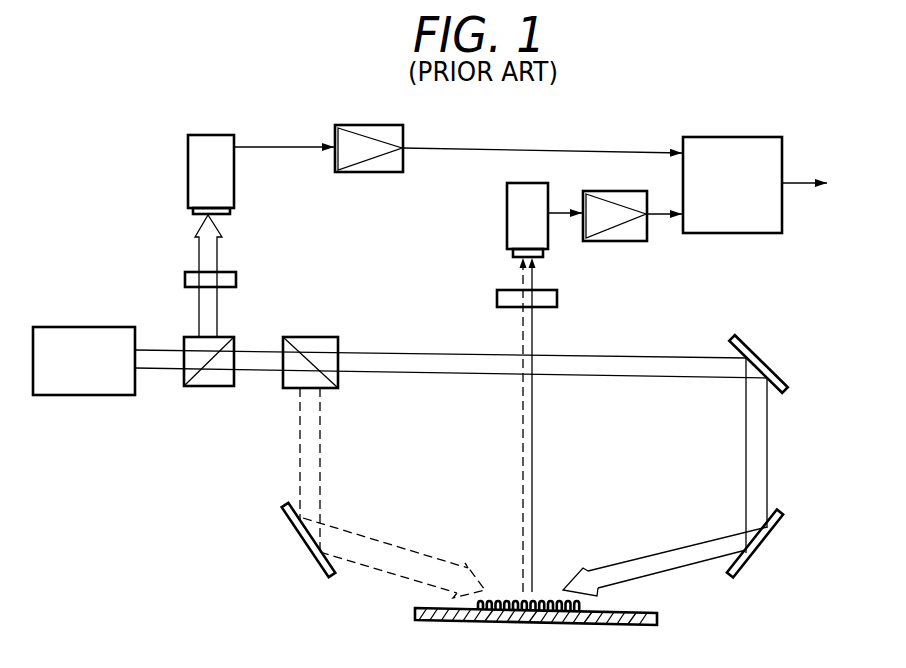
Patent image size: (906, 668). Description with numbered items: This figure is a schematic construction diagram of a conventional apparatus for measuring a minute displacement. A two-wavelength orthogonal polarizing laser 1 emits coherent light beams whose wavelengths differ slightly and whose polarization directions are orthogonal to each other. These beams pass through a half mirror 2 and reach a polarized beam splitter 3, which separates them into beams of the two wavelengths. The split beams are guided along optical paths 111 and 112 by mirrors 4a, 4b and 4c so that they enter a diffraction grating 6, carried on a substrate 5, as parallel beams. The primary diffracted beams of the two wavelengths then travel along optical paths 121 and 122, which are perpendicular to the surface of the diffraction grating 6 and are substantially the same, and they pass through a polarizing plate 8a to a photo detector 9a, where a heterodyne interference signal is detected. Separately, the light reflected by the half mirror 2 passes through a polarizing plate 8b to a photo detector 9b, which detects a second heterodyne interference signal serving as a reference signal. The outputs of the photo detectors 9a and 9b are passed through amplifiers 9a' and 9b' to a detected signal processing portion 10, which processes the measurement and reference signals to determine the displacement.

The two-wavelength orthogonal polarizing laser 1 is at (108, 327).
The half mirror 2 is at (228, 337).
The polarized beam splitter 3 is at (320, 337).
The mirror 4a is at (747, 348).
The mirror 4b is at (758, 548).
The mirror 4c is at (285, 515).
The substrate 5 is at (657, 616).
The diffraction grating 6 is at (545, 600).
The polarizing plate 8a is at (497, 295).
The polarizing plate 8b is at (185, 276).
The photo detector 9a is at (496, 219).
The photo detector 9b is at (183, 174).
The amplifier 9a' is at (619, 246).
The amplifier 9b' is at (369, 121).
The detected signal processing portion 10 is at (705, 137).
The optical path 111 is at (746, 466).
The optical path 112 is at (322, 453).
The optical path 121 is at (533, 393).
The optical path 122 is at (522, 432).